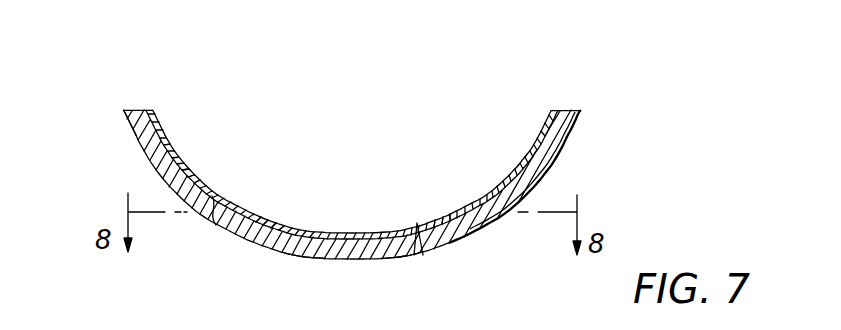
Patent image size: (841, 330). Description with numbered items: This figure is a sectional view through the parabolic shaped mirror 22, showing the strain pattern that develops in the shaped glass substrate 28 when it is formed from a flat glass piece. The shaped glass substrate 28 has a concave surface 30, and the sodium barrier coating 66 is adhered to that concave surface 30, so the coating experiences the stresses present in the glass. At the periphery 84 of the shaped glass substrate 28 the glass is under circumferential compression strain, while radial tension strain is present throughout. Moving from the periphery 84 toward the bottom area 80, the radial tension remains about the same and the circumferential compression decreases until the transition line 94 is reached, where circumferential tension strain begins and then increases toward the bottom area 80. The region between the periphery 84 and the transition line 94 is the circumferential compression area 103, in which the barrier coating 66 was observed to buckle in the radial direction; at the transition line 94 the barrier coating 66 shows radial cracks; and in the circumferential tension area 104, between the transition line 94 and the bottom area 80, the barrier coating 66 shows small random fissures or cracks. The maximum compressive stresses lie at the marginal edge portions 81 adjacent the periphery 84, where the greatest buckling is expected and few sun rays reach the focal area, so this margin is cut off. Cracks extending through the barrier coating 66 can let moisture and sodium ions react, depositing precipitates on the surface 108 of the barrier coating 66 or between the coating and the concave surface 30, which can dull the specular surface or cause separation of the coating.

The parabolic shaped mirror 22 is at (145, 266).
The shaped glass substrate 28 is at (308, 262).
The concave surface 30 is at (405, 257).
The barrier coating 66 is at (168, 149).
The bottom area 80 is at (352, 233).
The marginal edge portion 81 is at (130, 122).
The periphery 84 is at (137, 109).
The transition line 94 is at (217, 212).
The circumferential compression area 103 is at (151, 117).
The circumferential tension area 104 is at (267, 221).
The surface of the barrier coating 108 is at (195, 168).